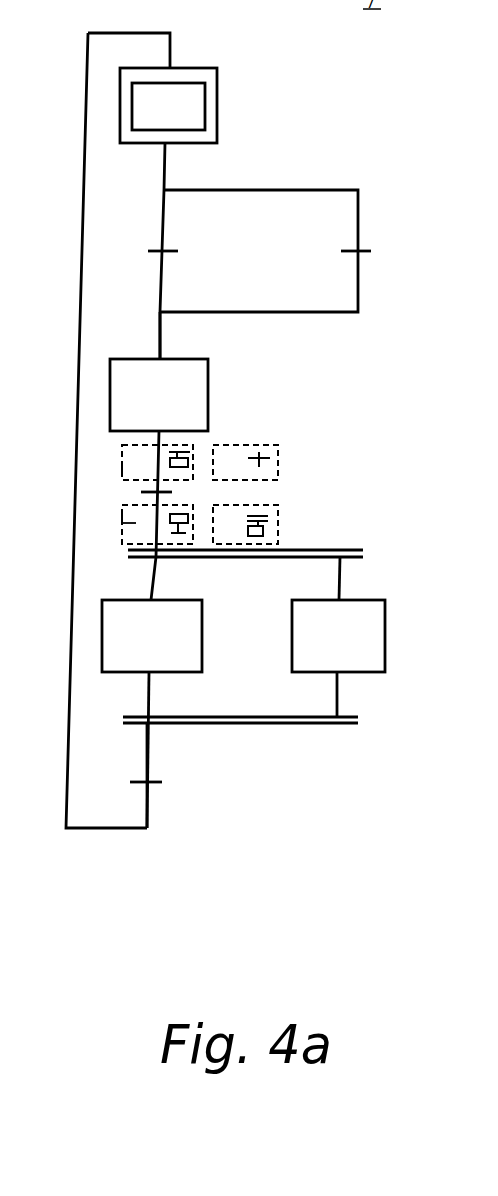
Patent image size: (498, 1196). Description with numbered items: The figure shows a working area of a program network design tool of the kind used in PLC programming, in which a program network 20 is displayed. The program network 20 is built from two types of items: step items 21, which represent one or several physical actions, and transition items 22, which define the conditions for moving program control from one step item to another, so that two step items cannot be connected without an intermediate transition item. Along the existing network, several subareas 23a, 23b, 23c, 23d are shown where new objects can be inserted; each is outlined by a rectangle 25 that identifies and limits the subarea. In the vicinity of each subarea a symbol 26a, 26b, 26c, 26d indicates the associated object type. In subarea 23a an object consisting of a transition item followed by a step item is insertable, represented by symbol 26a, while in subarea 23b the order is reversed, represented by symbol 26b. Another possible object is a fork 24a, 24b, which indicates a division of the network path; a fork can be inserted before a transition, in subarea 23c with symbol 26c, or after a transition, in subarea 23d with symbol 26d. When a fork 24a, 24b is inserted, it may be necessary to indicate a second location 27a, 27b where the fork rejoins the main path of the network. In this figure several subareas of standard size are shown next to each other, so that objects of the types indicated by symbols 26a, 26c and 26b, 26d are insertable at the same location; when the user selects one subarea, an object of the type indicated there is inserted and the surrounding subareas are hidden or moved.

The program network 20 is at (283, 148).
The step item 21 is at (217, 88).
The transition item 22 is at (175, 240).
The subarea 23a is at (130, 445).
The subarea 23b is at (120, 524).
The subarea 23c is at (232, 455).
The subarea 23d is at (228, 518).
The fork 24a is at (358, 213).
The fork 24b is at (350, 548).
The rectangle 25 is at (120, 470).
The symbol 26a is at (188, 462).
The symbol 26b is at (188, 518).
The symbol 26c is at (260, 461).
The symbol 26d is at (265, 530).
The second location 27a is at (163, 313).
The second location 27b is at (173, 775).